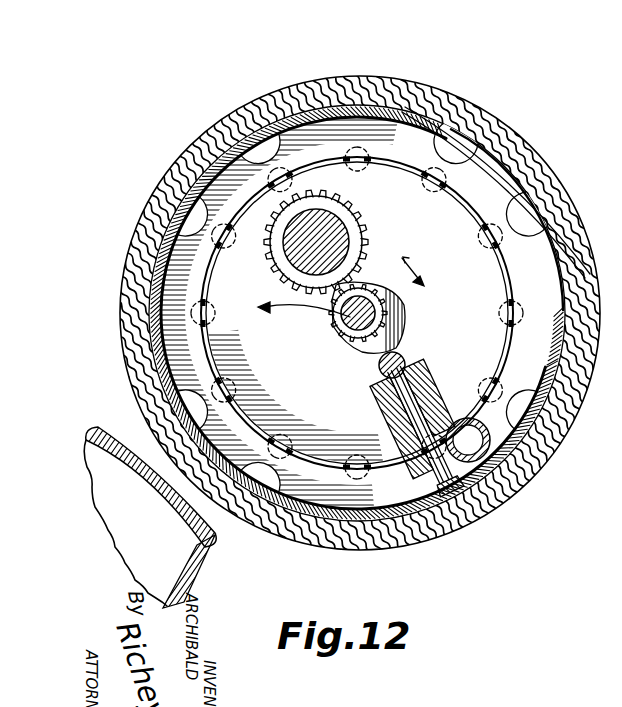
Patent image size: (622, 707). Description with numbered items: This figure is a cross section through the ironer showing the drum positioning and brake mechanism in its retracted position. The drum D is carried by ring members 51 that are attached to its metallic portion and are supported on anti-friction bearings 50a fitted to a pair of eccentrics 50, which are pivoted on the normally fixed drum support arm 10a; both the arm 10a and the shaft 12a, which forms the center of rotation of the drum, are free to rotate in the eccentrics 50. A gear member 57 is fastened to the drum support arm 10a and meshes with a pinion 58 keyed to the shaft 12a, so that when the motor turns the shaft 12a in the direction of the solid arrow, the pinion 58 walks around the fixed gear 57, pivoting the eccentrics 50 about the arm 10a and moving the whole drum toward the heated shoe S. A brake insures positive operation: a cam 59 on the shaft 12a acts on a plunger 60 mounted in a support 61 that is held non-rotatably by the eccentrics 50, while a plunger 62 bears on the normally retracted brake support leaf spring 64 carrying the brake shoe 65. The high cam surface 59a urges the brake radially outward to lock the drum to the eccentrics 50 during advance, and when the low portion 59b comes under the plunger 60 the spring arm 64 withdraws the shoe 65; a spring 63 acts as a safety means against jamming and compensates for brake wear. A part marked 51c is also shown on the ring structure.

The drum D is at (222, 112).
The heated shoe S is at (220, 543).
The eccentrics 50 is at (484, 272).
The anti-friction bearings 50a is at (506, 244).
The ring members 51 is at (498, 194).
The strip 51c is at (530, 208).
The drum support arm 10a is at (308, 228).
The gear members 57 is at (350, 277).
The pinions 58 is at (366, 286).
The cam 59 is at (403, 308).
The high cam surface 59a is at (403, 320).
The low portion 59b is at (330, 338).
The shaft 12a is at (359, 322).
The plunger 60 is at (391, 351).
The support 61 is at (413, 367).
The plunger 62 is at (418, 388).
The spring 63 is at (382, 369).
The brake support leaf spring 64 is at (470, 424).
The brake shoe 65 is at (465, 496).